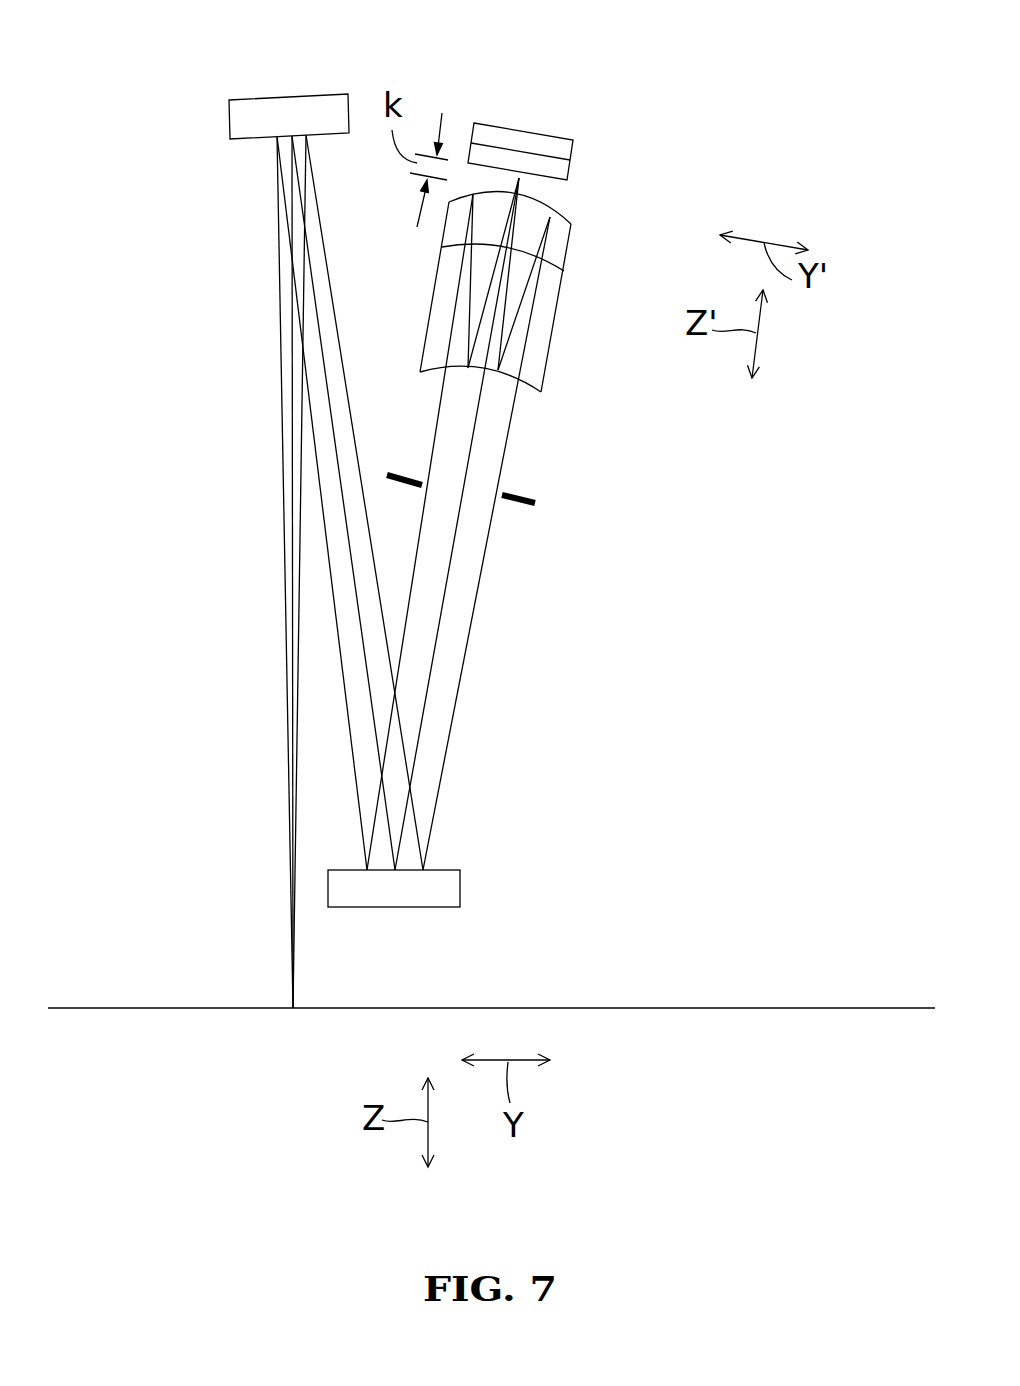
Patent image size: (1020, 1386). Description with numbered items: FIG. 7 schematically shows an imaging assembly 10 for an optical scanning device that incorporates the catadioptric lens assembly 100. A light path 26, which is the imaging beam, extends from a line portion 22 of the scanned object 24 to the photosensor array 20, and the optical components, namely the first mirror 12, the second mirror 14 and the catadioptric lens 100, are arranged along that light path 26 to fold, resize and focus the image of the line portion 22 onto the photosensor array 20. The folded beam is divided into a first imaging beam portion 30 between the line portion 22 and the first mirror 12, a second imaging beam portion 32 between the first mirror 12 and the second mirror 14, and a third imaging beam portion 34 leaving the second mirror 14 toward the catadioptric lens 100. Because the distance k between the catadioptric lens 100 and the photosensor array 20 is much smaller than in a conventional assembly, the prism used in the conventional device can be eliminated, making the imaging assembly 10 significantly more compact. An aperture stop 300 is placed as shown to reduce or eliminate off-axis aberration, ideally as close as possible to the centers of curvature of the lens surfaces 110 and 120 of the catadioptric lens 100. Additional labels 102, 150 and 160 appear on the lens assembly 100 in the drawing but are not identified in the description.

The imaging assembly 10 is at (166, 53).
The first mirror 12 is at (288, 94).
The second mirror 14 is at (462, 886).
The photosensor array 20 is at (503, 124).
The line portion 22 is at (293, 1010).
The object 24 is at (832, 1005).
The light path 26 is at (246, 363).
The first imaging beam portion 30 is at (287, 477).
The second imaging beam portion 32 is at (350, 477).
The third imaging beam portion 34 is at (467, 570).
The catadioptric lens 100 is at (516, 313).
The internal ray path 102 is at (483, 247).
The lens surface 110 is at (508, 378).
The lens surface 120 is at (557, 213).
The intermediate lens surface 150 is at (568, 243).
The lens body 160 is at (436, 266).
The aperture stop 300 is at (538, 503).